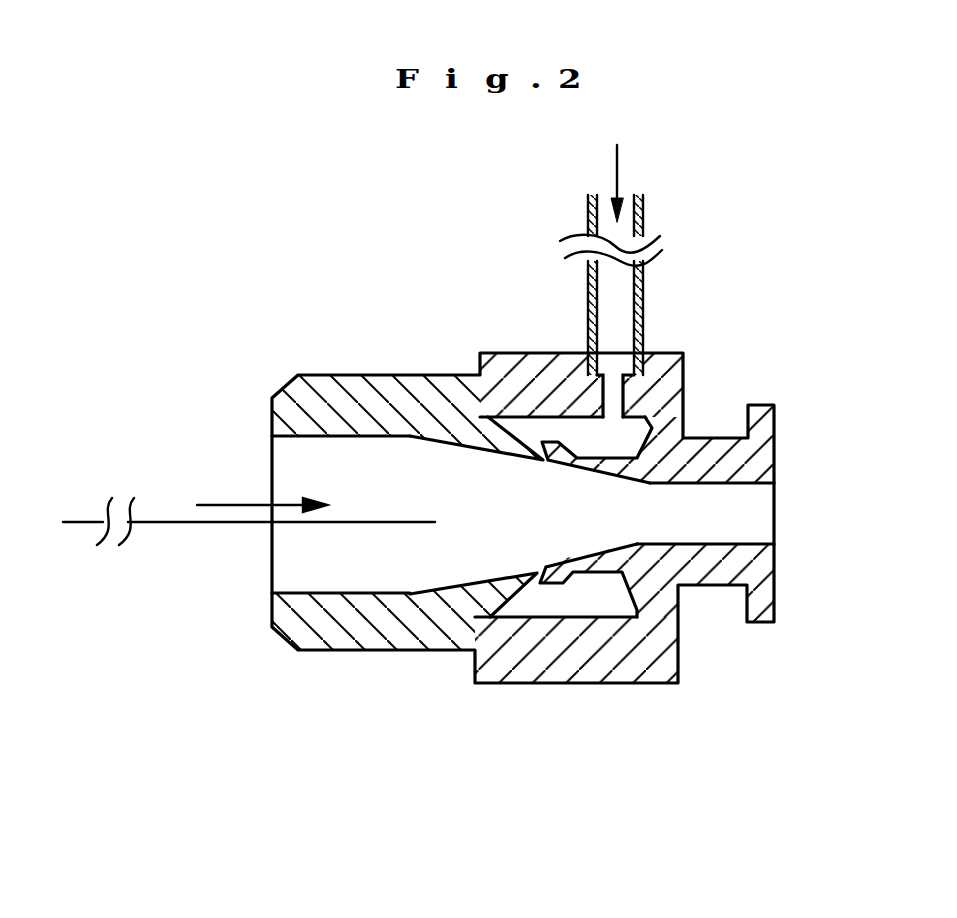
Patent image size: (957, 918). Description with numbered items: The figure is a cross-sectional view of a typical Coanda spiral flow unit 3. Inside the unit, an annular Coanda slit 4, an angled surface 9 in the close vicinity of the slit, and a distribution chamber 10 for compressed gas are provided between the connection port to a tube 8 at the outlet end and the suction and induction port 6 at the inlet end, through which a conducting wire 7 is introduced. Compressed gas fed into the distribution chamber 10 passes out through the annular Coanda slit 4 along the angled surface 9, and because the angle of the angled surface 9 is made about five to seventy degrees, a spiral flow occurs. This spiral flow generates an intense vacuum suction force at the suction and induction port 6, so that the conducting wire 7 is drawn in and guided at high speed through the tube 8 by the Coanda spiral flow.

The Coanda spiral flow unit 3 is at (814, 592).
The annular Coanda slit 4 is at (547, 463).
The suction and induction port 6 is at (272, 558).
The conducting wire 7 is at (157, 522).
The tube 8 is at (775, 503).
The angled surface 9 is at (656, 426).
The distribution chamber 10 is at (603, 435).